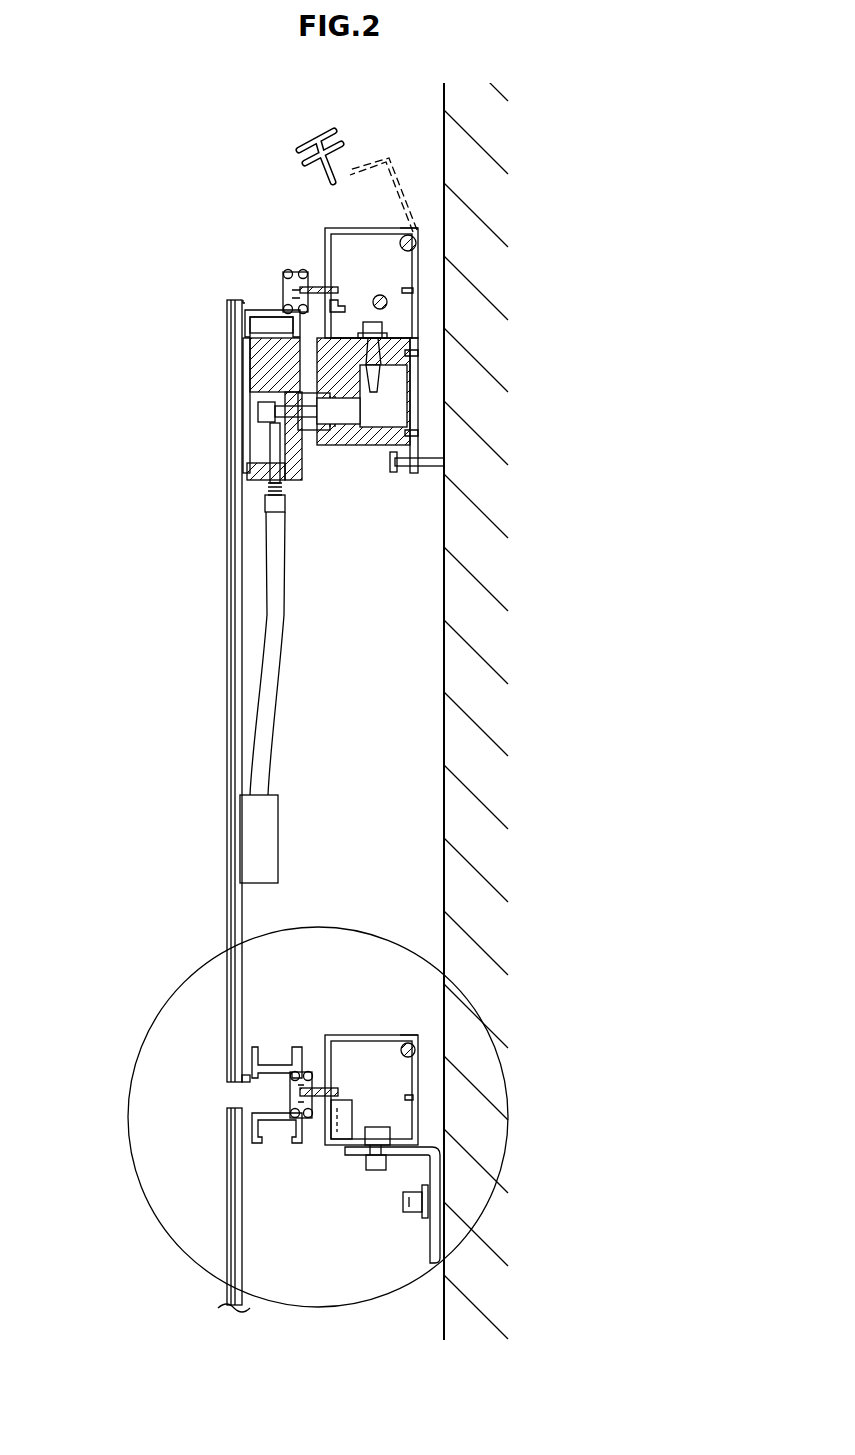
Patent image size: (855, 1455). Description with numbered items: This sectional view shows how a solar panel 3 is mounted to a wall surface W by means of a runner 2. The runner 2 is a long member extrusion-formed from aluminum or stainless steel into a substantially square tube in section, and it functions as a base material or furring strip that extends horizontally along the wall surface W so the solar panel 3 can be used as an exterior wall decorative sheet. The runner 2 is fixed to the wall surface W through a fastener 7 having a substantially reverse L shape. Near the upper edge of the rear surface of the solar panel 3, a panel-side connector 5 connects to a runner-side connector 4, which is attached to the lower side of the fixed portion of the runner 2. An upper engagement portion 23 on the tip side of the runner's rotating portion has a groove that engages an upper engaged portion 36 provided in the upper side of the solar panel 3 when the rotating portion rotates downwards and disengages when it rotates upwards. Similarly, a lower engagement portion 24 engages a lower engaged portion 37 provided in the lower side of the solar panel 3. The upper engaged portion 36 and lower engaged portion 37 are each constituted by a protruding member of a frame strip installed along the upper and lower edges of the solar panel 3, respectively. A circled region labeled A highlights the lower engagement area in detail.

The wall surface W is at (440, 95).
The runner 2 is at (313, 244).
The solar panel 3 is at (222, 521).
The runner-side connector 4 is at (369, 444).
The panel-side connector 5 is at (297, 482).
The fastener 7 is at (425, 1236).
The upper engagement portion 23 is at (287, 294).
The lower engagement portion 24 is at (305, 1070).
The upper engaged portion 36 is at (288, 306).
The lower engaged portion 37 is at (286, 1083).
The detail region A is at (128, 1110).